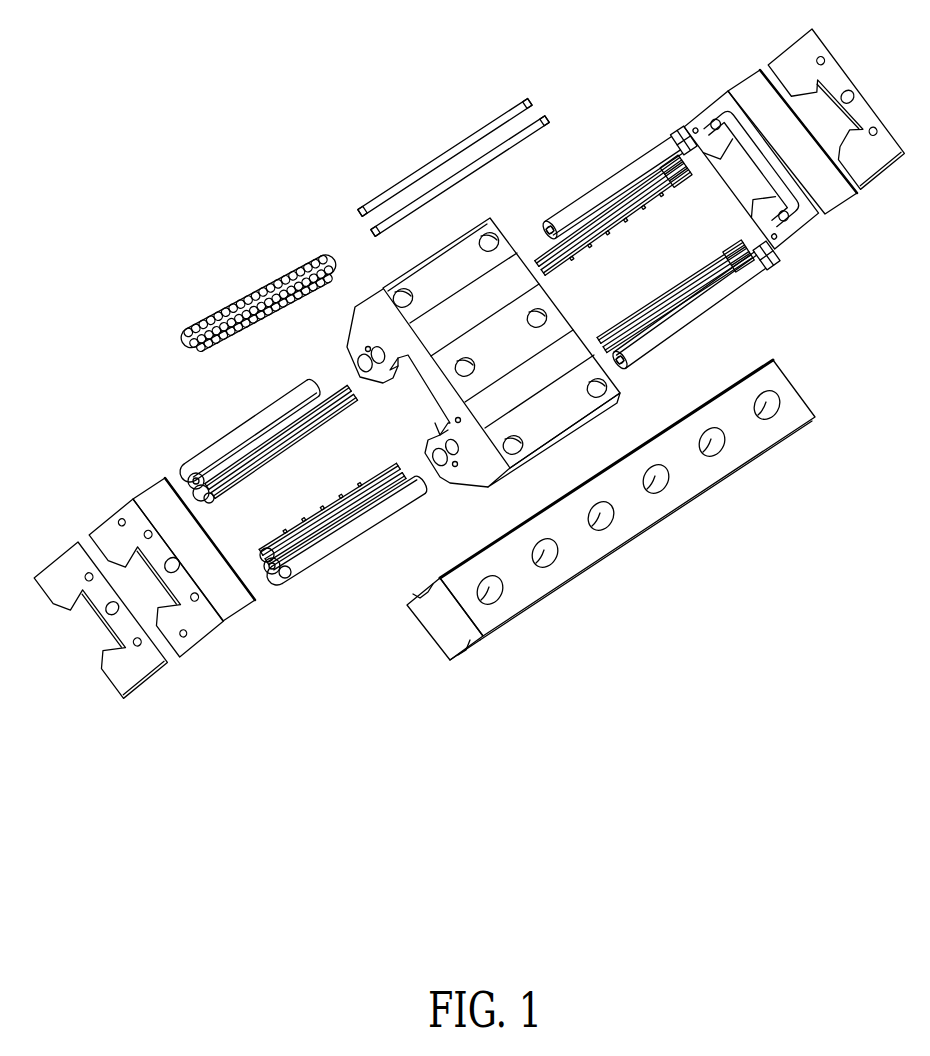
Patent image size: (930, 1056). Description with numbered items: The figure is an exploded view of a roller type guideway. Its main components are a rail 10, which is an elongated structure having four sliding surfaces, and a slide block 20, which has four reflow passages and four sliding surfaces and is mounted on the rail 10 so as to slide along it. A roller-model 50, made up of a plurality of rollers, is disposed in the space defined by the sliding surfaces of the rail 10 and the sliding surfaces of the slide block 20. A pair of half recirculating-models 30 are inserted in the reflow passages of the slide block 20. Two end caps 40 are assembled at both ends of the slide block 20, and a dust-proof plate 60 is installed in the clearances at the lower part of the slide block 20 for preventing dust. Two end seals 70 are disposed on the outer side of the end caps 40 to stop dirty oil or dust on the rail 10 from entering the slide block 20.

The rail 10 is at (637, 513).
The slide block 20 is at (472, 468).
The half recirculating-model 30 is at (633, 177).
The end cap 40 is at (750, 90).
The roller-model 50 is at (275, 275).
The dust-proof plate 60 is at (472, 143).
The end seal 70 is at (870, 165).